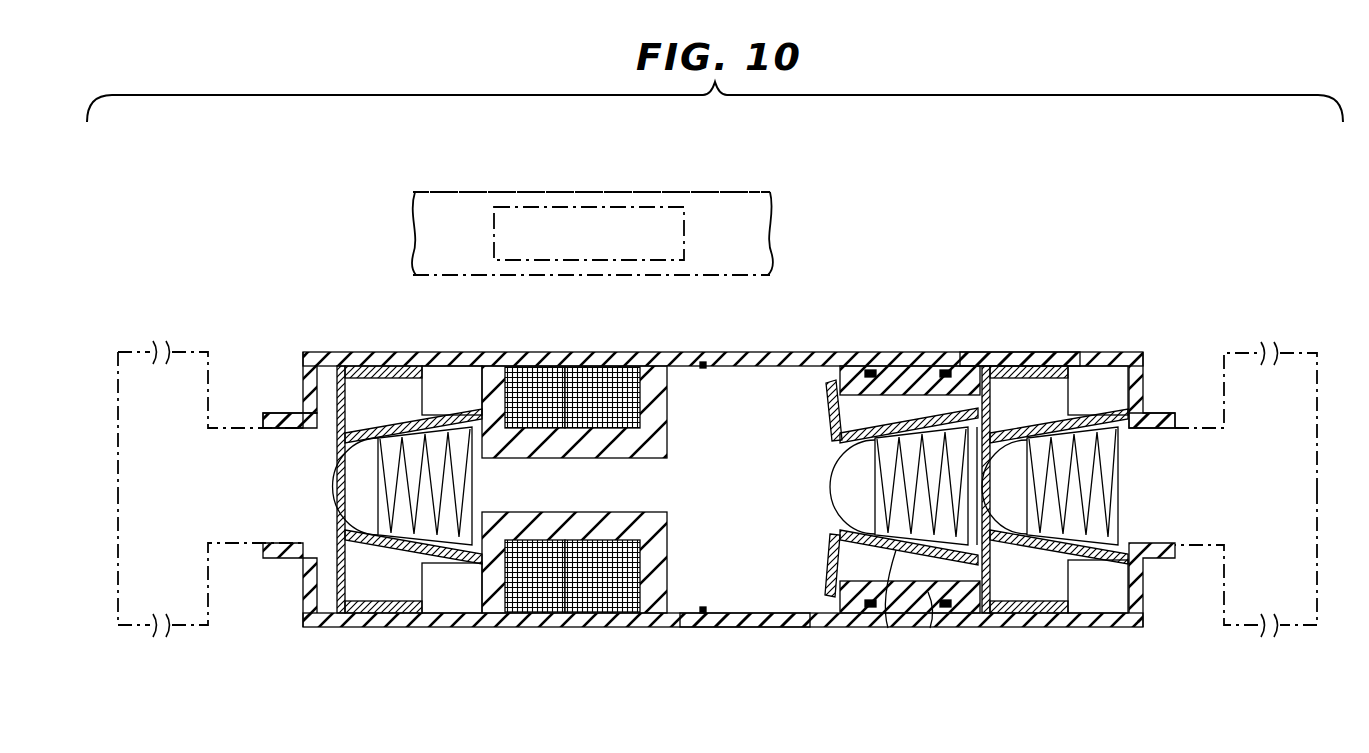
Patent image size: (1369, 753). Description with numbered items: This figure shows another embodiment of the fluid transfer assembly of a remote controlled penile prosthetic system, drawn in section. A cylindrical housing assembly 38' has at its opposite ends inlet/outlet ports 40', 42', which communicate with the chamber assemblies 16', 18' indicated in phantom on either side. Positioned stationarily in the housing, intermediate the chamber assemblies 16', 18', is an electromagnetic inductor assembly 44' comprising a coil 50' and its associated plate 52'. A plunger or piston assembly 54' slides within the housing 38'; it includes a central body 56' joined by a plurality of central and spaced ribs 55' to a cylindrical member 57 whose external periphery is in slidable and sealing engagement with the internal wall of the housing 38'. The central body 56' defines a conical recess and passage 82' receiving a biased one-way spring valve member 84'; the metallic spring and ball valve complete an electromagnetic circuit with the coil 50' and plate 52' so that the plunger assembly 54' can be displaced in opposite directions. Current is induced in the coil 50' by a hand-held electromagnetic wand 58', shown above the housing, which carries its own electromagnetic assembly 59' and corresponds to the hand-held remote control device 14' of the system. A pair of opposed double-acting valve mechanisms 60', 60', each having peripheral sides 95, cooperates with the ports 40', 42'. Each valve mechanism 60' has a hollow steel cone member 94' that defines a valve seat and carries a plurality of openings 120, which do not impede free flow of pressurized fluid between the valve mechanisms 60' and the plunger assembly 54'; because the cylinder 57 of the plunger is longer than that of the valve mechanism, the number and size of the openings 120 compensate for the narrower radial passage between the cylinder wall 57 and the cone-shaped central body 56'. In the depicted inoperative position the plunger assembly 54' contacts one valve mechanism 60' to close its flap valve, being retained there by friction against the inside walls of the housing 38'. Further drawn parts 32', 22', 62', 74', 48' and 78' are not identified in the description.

The hand-held remote control device 14' is at (592, 190).
The handheld electromagnetic wand 58' is at (595, 162).
The electromagnetic assembly 59' is at (604, 196).
The chamber assembly 18' is at (210, 394).
The conduit 32' is at (210, 584).
The chamber assembly 16' is at (1246, 394).
The conduit 22' is at (1246, 587).
The inlet/outlet port 42' is at (280, 392).
The inlet/outlet port 40' is at (1172, 398).
The electromagnetic inductor assembly 44' is at (719, 462).
The peripheral side 95 is at (1033, 364).
The cylindrical housing assembly 38' is at (745, 646).
The double-acting valve mechanism 60' is at (741, 455).
The cone member 94' is at (413, 431).
The spring seat 62' is at (452, 455).
The ball 74' is at (661, 516).
The bobbin 48' is at (574, 489).
The coil 50' is at (535, 455).
The plate 52' is at (602, 455).
The retaining tab 78' is at (800, 410).
The central body 56' is at (803, 565).
The plunger assembly 54' is at (910, 346).
The cylindrical member 57 is at (935, 607).
The ribs 55' is at (909, 431).
The one-way spring valve member 84' is at (877, 495).
The conical recess and passage 82' is at (824, 487).
The openings 120 is at (930, 628).